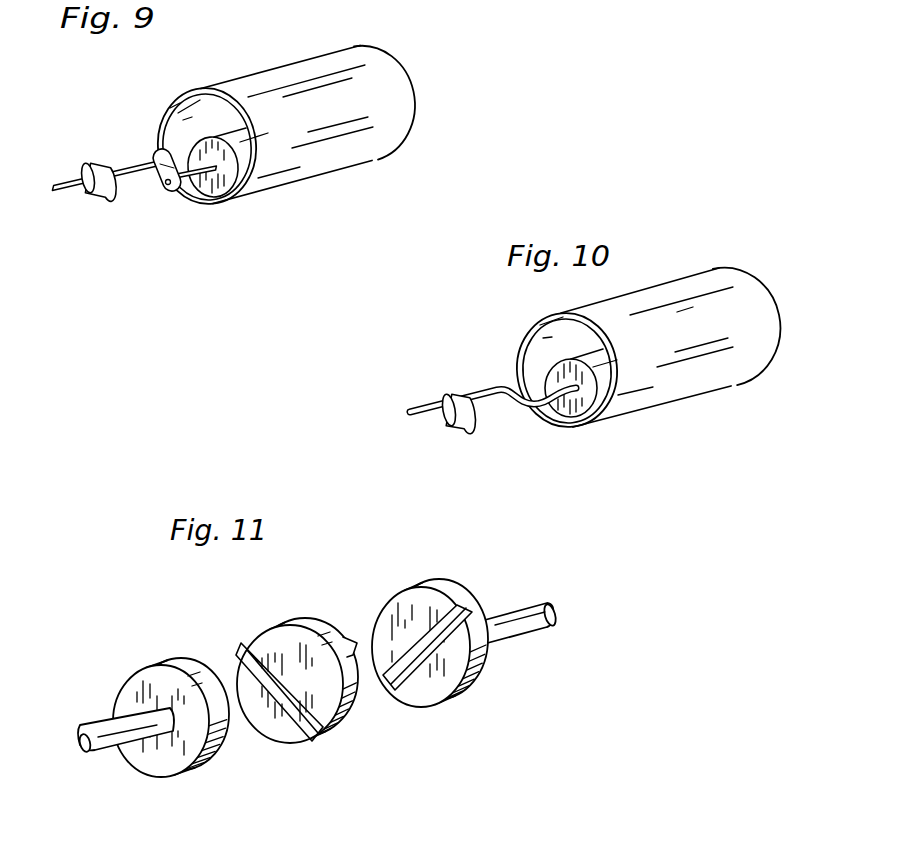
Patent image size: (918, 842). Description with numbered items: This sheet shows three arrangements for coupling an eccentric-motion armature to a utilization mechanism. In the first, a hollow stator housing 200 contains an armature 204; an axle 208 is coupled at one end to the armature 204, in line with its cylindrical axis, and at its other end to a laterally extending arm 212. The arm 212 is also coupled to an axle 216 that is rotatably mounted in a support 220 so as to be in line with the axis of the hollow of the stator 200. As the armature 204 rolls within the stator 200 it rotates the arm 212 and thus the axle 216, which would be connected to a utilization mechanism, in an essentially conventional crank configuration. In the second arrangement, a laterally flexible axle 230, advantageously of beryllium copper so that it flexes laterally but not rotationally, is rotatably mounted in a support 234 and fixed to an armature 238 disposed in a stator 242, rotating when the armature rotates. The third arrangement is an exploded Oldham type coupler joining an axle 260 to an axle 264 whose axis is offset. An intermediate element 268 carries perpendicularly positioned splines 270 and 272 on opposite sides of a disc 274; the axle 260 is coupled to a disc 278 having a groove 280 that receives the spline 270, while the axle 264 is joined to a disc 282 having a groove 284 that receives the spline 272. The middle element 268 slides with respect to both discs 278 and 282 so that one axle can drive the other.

In FIG. 9, the hollow stator housing 200 is at (317, 162).
In FIG. 9, the armature 204 is at (212, 196).
In FIG. 9, the axle 208 is at (197, 200).
In FIG. 9, the laterally extending arm 212 is at (163, 184).
In FIG. 9, the axle 216 is at (146, 163).
In FIG. 9, the support 220 is at (88, 192).
In FIG. 10, the stator 242 is at (680, 383).
In FIG. 10, the armature 238 is at (566, 406).
In FIG. 10, the laterally flexible axle 230 is at (492, 398).
In FIG. 10, the support 234 is at (447, 413).
In FIG. 11, the axle 260 is at (113, 756).
In FIG. 11, the disc 278 is at (165, 762).
In FIG. 11, the groove 280 is at (208, 756).
In FIG. 11, the spline 270 is at (247, 643).
In FIG. 11, the disc 274 is at (298, 626).
In FIG. 11, the spline 272 is at (348, 636).
In FIG. 11, the intermediate element 268 is at (352, 717).
In FIG. 11, the disc 282 is at (473, 682).
In FIG. 11, the groove 284 is at (393, 683).
In FIG. 11, the axle 264 is at (527, 620).